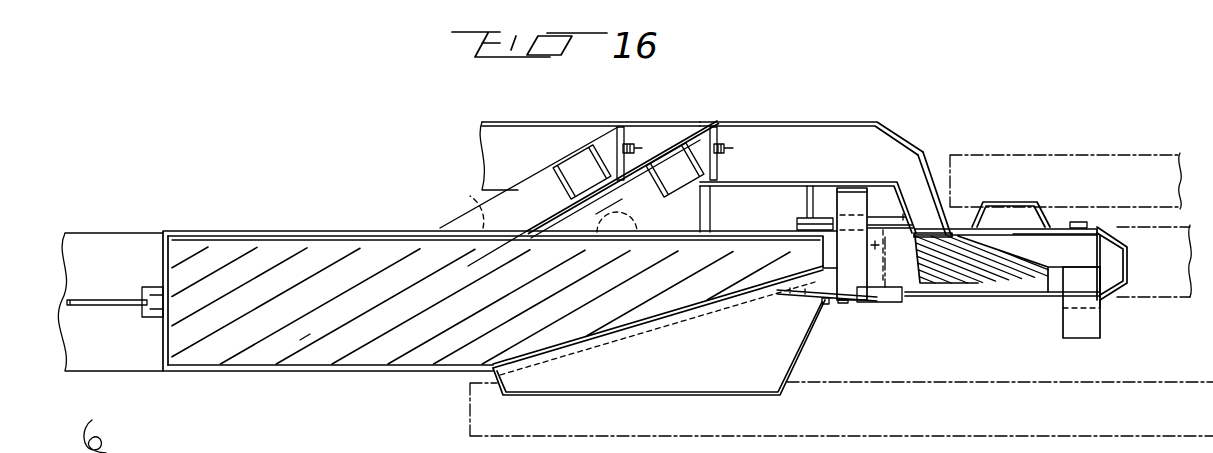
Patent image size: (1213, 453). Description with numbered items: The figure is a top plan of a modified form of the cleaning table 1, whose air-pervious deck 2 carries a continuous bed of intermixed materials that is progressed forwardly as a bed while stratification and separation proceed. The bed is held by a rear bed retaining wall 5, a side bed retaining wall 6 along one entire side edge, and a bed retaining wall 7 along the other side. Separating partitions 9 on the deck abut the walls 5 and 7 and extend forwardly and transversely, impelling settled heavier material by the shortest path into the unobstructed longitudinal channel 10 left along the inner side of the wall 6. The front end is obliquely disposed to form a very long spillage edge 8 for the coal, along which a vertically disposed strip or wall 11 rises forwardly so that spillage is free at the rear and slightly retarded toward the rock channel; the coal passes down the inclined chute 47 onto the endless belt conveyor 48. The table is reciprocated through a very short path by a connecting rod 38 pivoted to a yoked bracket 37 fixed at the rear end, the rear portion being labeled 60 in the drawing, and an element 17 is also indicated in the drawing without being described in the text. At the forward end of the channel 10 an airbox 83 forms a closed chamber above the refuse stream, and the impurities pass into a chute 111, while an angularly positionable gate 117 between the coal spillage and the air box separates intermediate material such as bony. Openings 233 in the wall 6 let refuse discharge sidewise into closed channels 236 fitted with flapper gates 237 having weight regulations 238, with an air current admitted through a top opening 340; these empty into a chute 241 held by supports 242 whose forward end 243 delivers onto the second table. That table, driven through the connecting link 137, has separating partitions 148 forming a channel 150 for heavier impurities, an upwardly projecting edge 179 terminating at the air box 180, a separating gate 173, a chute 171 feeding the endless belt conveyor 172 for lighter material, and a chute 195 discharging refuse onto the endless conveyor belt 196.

The cleaning table 1 is at (232, 378).
The air-pervious bottom or deck 2 is at (400, 338).
The bed retaining wall 5 is at (168, 348).
The bed retaining wall 6 is at (386, 236).
The bed retaining wall 7 is at (305, 372).
The spillage or discharge edge 8 is at (573, 348).
The separating partitions 9 is at (277, 263).
The channel 10 is at (335, 236).
The vertically-disposed strip or wall 11 is at (648, 325).
The inclined conveyor member 17 is at (716, 168).
The yoked bracket 37 is at (161, 286).
The connecting rod 38 is at (118, 300).
The downwardly-inclined chute 47 is at (772, 358).
The endless belt-conveyor 48 is at (470, 410).
The end section 60 is at (88, 232).
The airbox 83 is at (836, 248).
The chute 111 is at (883, 290).
The angularly-positionable gate 117 is at (778, 291).
The connecting link 137 is at (885, 221).
The separating partitions 148 is at (940, 268).
The channel 150 is at (975, 262).
The chute 171 is at (1021, 211).
The endless belt conveyor 172 is at (1152, 152).
The separating gate 173 is at (1062, 228).
The upwardly projecting edge 179 is at (1036, 258).
The air box 180 is at (1078, 292).
The chute 195 is at (1121, 250).
The endless conveyor belt 196 is at (1165, 297).
The openings 233 is at (640, 224).
The closed channels 236 is at (508, 194).
The flapper gates 237 is at (623, 127).
The weight regulations 238 is at (636, 146).
The chute 241 is at (858, 114).
The supports 242 is at (800, 198).
The forward end 243 is at (928, 228).
The top opening 340 is at (578, 163).